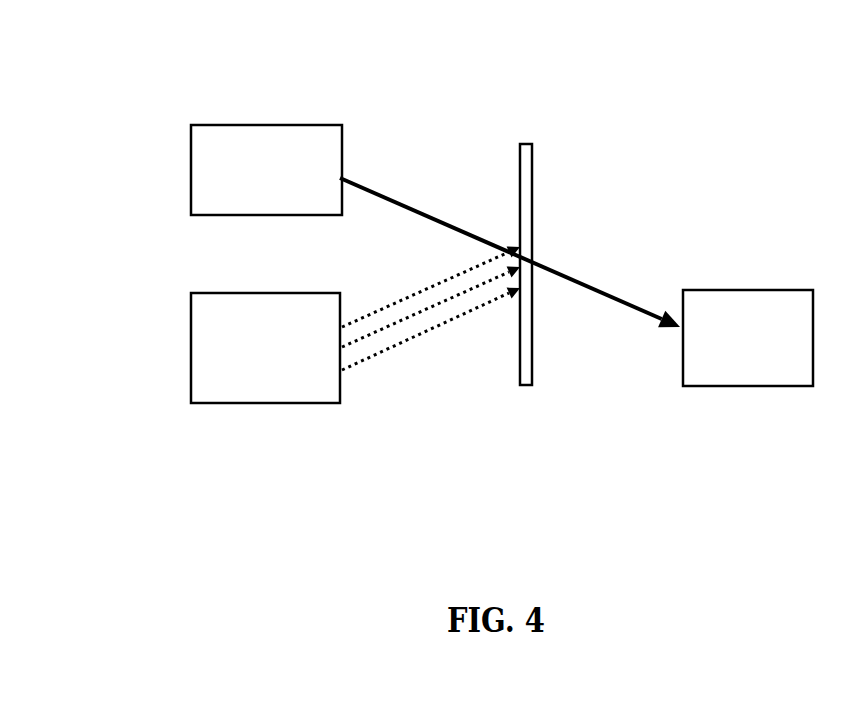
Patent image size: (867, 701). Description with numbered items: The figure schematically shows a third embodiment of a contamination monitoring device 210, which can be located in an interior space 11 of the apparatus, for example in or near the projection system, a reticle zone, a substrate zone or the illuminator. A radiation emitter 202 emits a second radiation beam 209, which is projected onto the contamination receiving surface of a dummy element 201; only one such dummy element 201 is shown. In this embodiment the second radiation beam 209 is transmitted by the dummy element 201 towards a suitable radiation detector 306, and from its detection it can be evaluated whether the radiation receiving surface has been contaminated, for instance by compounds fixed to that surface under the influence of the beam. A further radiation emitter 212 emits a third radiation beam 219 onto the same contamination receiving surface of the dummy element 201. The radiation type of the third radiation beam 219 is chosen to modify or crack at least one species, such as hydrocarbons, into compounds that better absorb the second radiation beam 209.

The monitoring device 210 is at (180, 93).
The radiation emitter 202 is at (266, 170).
The further radiation emitter 212 is at (265, 348).
The radiation detector 306 is at (748, 338).
The dummy element 201 is at (533, 166).
The second radiation beam 209 is at (415, 212).
The third radiation beam 219 is at (397, 335).
The interior space 11 is at (458, 162).